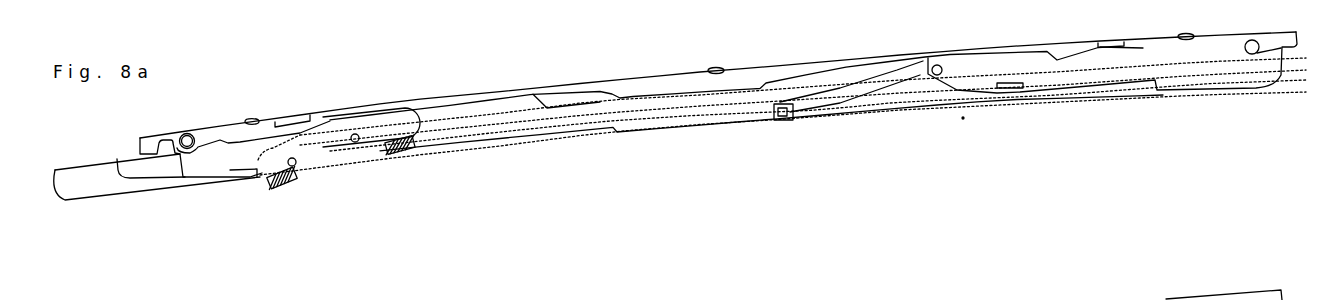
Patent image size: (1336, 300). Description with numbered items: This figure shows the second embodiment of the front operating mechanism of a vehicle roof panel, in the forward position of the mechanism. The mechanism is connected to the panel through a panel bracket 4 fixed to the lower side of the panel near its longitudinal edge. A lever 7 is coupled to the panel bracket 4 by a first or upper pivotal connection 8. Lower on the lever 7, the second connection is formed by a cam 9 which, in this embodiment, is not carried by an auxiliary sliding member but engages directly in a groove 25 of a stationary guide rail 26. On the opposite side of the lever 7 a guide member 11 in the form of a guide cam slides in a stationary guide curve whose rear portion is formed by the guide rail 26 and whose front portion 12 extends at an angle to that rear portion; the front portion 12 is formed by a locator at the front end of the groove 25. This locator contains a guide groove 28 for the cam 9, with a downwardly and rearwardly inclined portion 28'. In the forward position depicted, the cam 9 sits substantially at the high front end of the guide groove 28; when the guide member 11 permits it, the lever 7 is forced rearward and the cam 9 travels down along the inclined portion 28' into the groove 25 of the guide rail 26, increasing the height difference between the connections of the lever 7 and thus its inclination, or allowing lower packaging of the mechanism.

The panel bracket 4 is at (600, 81).
The lever 7 is at (210, 153).
The first or upper pivotal connection 8 is at (188, 133).
The cam 9 is at (398, 152).
The guide member 11 is at (284, 175).
The front portion 12 is at (238, 180).
The groove 25 is at (626, 133).
The stationary guide rail 26 is at (707, 127).
The guide groove 28 is at (782, 87).
The downwardly and rearwardly inclined portion 28' is at (818, 162).